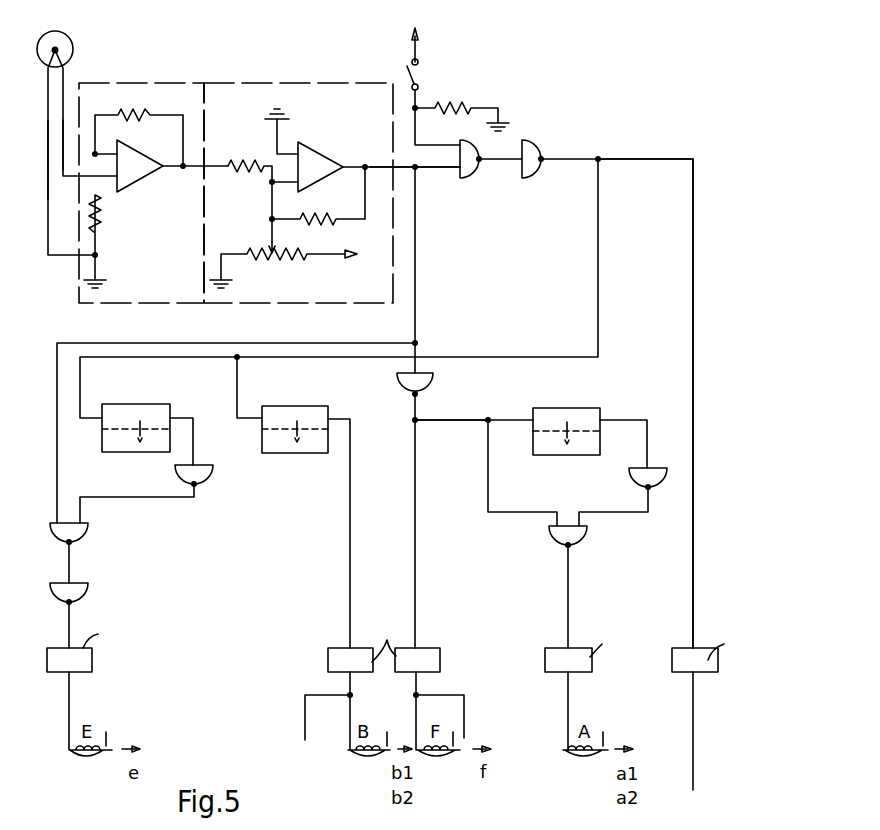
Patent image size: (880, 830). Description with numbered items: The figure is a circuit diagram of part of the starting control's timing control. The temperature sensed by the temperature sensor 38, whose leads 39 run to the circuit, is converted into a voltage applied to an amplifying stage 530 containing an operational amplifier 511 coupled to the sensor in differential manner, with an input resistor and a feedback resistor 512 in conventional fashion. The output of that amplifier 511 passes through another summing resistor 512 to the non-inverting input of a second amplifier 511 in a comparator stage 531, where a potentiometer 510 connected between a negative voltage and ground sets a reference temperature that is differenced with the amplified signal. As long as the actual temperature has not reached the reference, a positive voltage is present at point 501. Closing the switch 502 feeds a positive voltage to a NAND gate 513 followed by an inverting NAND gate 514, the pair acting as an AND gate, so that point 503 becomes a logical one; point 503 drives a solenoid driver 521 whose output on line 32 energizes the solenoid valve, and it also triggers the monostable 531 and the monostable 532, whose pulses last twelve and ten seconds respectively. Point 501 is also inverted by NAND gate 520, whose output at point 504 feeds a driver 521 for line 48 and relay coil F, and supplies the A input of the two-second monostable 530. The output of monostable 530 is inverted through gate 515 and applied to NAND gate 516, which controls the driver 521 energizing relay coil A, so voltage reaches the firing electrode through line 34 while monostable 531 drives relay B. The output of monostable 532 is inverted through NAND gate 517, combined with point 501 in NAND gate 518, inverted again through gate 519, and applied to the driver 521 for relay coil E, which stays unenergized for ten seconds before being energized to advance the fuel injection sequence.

The temperature sensor 38 is at (73, 49).
The sensor leads 39 is at (62, 166).
The line 32 is at (692, 728).
The line 34 is at (304, 733).
The line 48 is at (466, 727).
The point 501 is at (417, 170).
The switch 502 is at (412, 76).
The point 503 is at (600, 165).
The point 504 is at (418, 424).
The potentiometer 510 is at (266, 246).
The operational amplifier 511 is at (150, 180).
The resistor 512 is at (135, 112).
The NAND gate 513 is at (484, 170).
The inverting NAND gate 514 is at (546, 170).
The inverting gate 515 is at (652, 480).
The NAND gate 516 is at (584, 533).
The NAND gate 517 is at (204, 478).
The NAND gate 518 is at (90, 537).
The gate 519 is at (90, 592).
The inverting NAND gate 520 is at (432, 388).
The solenoid driver 521 is at (672, 660).
The amplifying stage 530 is at (170, 293).
The comparator stage 531 is at (358, 295).
The monostable multivibrator 532 is at (158, 406).